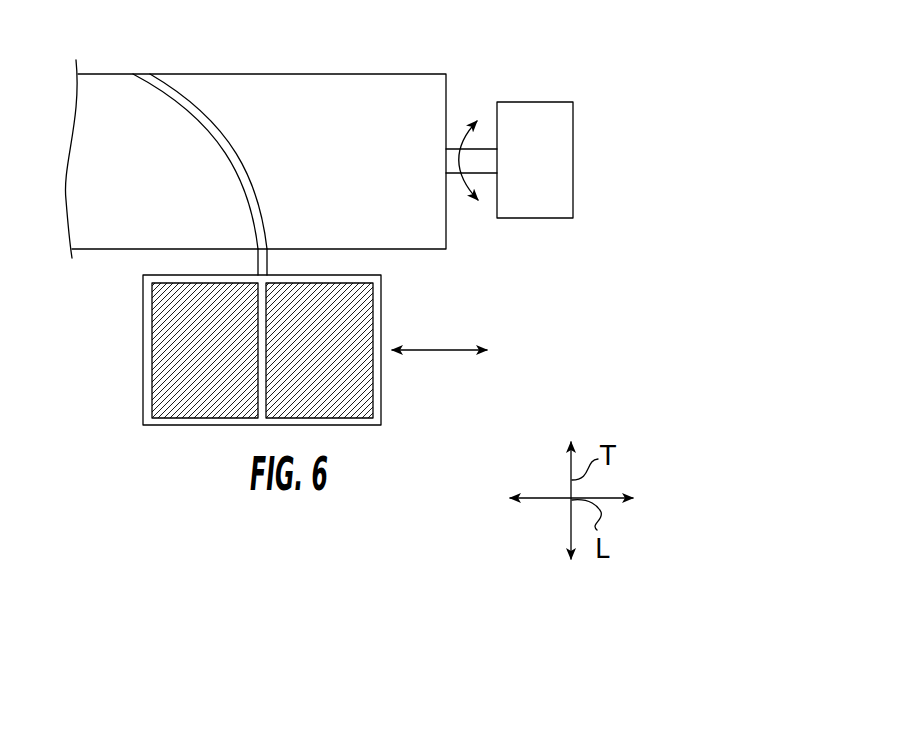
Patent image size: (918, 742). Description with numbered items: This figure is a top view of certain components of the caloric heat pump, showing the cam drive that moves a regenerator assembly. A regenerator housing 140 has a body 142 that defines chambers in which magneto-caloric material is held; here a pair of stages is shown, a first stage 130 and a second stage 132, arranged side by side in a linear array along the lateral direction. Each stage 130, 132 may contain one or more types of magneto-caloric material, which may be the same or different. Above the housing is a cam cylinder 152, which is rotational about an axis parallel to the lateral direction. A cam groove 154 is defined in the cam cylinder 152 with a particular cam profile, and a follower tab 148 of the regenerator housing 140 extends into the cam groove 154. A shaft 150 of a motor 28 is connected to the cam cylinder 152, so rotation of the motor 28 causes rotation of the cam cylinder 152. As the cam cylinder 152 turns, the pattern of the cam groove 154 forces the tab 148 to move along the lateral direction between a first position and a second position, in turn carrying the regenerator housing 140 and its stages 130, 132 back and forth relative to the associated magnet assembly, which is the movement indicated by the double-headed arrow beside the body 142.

The motor 28 is at (548, 177).
The first stage 130 is at (195, 326).
The second stage 132 is at (327, 320).
The regenerator housing 140 is at (140, 372).
The body 142 is at (383, 383).
The follower tab 148 is at (280, 258).
The shaft 150 is at (479, 160).
The cam cylinder 152 is at (292, 108).
The cam groove 154 is at (208, 122).